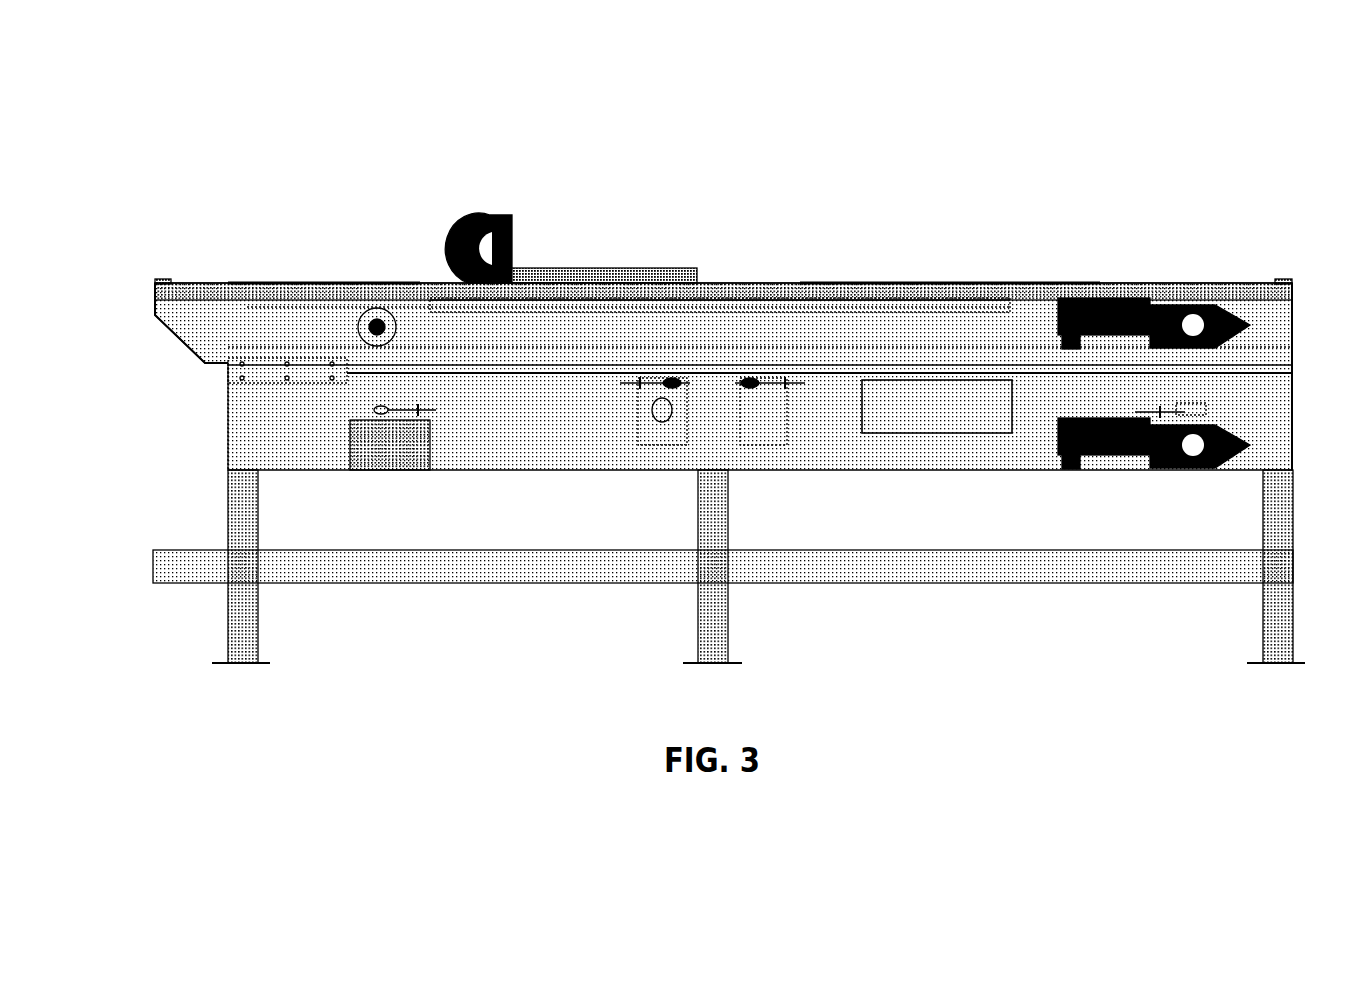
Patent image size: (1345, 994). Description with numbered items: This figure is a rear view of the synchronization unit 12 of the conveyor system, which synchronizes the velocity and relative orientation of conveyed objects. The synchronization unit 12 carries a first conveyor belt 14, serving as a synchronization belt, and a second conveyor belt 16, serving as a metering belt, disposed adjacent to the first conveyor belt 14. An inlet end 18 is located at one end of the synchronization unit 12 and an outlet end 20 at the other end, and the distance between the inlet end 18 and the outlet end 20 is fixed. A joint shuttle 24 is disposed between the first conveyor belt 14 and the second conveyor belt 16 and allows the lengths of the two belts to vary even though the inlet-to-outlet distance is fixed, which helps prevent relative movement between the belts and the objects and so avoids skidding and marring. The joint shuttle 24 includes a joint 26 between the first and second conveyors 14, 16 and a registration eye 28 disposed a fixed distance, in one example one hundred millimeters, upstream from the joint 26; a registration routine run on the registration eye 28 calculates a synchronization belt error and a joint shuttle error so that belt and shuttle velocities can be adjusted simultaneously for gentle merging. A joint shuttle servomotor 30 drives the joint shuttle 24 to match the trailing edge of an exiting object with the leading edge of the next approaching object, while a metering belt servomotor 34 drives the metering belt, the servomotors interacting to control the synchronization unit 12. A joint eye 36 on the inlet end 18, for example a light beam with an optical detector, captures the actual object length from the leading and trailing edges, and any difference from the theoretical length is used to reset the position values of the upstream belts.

The synchronization unit 12 is at (954, 160).
The first conveyor belt 14 is at (323, 281).
The second conveyor belt 16 is at (1073, 281).
The inlet end 18 is at (153, 285).
The outlet end 20 is at (1290, 283).
The joint shuttle 24 is at (613, 232).
The joint 26 is at (541, 264).
The registration eye 28 is at (466, 276).
The joint shuttle servomotor 30 is at (1155, 300).
The metering belt servomotor 34 is at (1190, 470).
The joint eye 36 is at (157, 280).